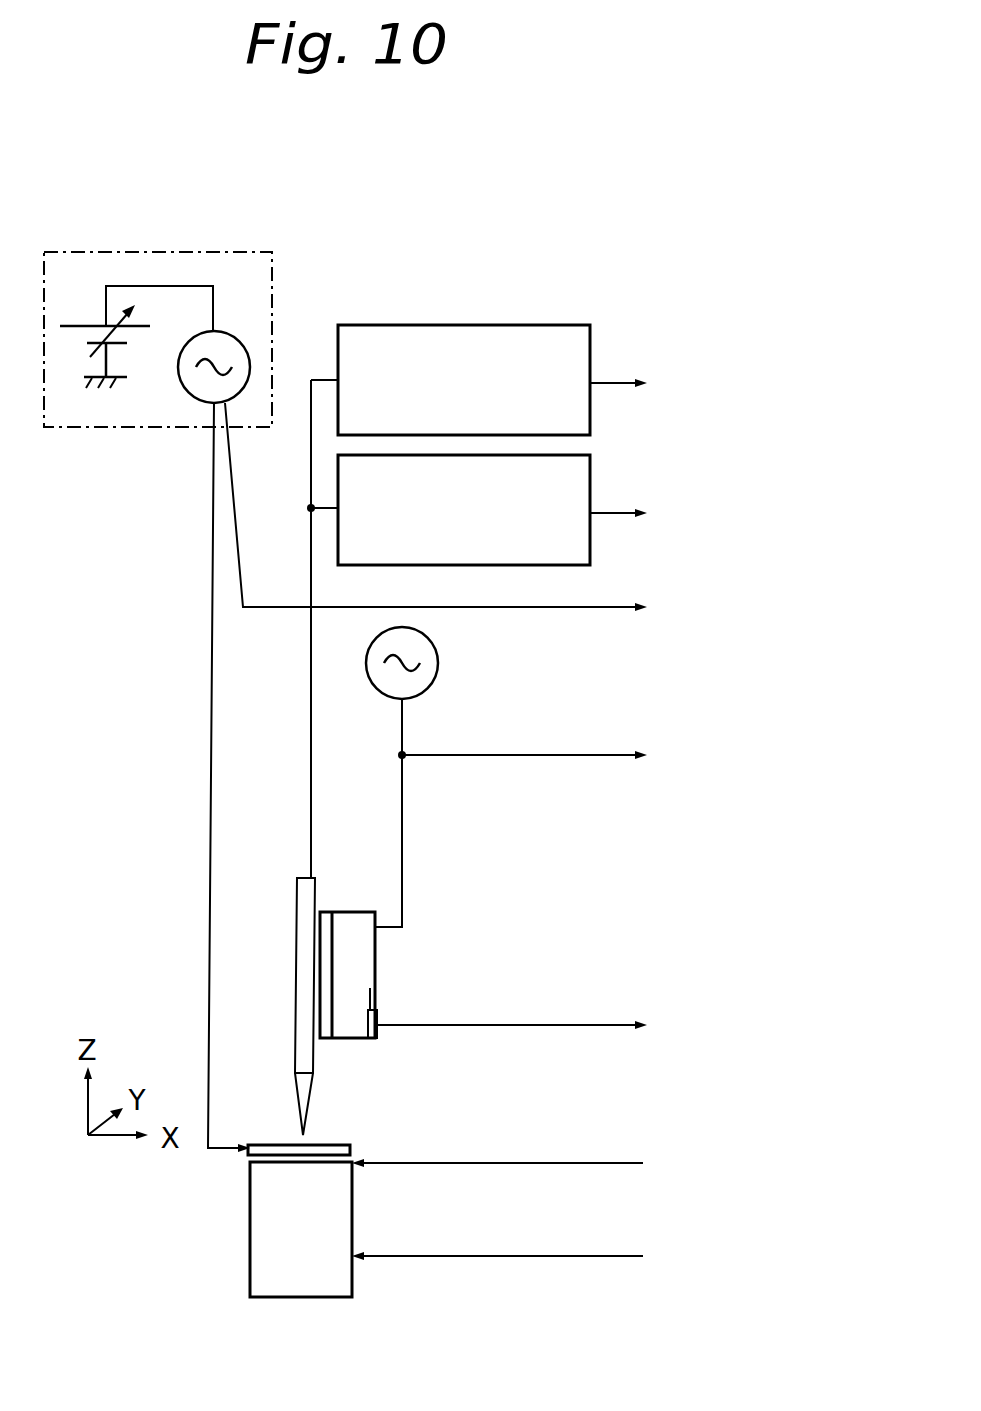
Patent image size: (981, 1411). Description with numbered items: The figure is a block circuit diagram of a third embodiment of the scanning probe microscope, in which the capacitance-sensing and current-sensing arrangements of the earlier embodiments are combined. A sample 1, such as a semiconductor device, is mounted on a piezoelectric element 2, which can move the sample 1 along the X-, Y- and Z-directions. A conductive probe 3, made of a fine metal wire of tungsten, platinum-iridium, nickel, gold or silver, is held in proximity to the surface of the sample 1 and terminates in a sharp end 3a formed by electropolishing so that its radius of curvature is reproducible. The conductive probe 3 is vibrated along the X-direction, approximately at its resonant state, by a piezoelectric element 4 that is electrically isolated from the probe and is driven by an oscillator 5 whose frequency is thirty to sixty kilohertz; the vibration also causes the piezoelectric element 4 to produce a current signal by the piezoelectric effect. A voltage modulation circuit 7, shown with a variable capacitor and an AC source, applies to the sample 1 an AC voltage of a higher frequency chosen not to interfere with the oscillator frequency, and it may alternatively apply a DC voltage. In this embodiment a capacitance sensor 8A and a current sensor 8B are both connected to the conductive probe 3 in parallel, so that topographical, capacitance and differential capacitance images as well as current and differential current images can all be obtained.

The sample 1 is at (333, 1145).
The piezoelectric element 2 is at (352, 1203).
The conductive probe 3 is at (307, 902).
The sharp end 3a is at (315, 1090).
The piezoelectric element 4 is at (356, 912).
The oscillator 5 is at (438, 657).
The voltage modulation circuit 7 is at (248, 252).
The capacitance sensor 8A is at (458, 325).
The current sensor 8B is at (590, 488).